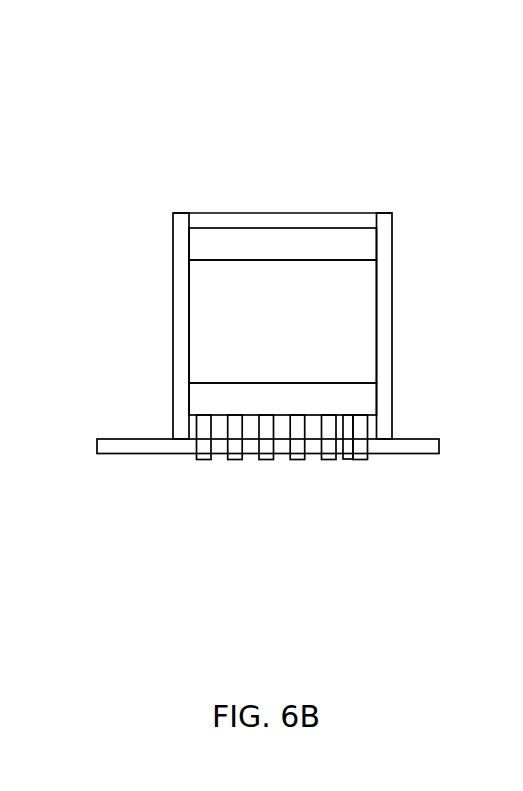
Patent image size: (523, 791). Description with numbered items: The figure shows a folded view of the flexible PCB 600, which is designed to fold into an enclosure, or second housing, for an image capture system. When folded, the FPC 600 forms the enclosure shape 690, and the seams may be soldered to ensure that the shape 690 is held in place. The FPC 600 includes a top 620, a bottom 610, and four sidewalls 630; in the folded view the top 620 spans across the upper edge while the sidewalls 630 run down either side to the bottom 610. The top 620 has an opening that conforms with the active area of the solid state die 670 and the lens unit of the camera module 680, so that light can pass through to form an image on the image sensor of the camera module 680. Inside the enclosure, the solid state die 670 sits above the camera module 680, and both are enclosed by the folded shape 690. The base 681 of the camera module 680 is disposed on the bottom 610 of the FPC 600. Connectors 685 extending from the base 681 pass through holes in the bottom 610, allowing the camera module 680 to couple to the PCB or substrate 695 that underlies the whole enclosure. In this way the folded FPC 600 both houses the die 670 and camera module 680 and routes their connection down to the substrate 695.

The enclosure shape 690 is at (134, 72).
The flexible PCB 600 is at (233, 198).
The top 620 is at (327, 213).
The sidewalls 630 is at (172, 342).
The solid state die 670 is at (297, 253).
The camera module 680 is at (300, 348).
The base 681 is at (350, 398).
The connectors 685 is at (207, 450).
The bottom 610 is at (345, 428).
The PCB or substrate 695 is at (105, 447).